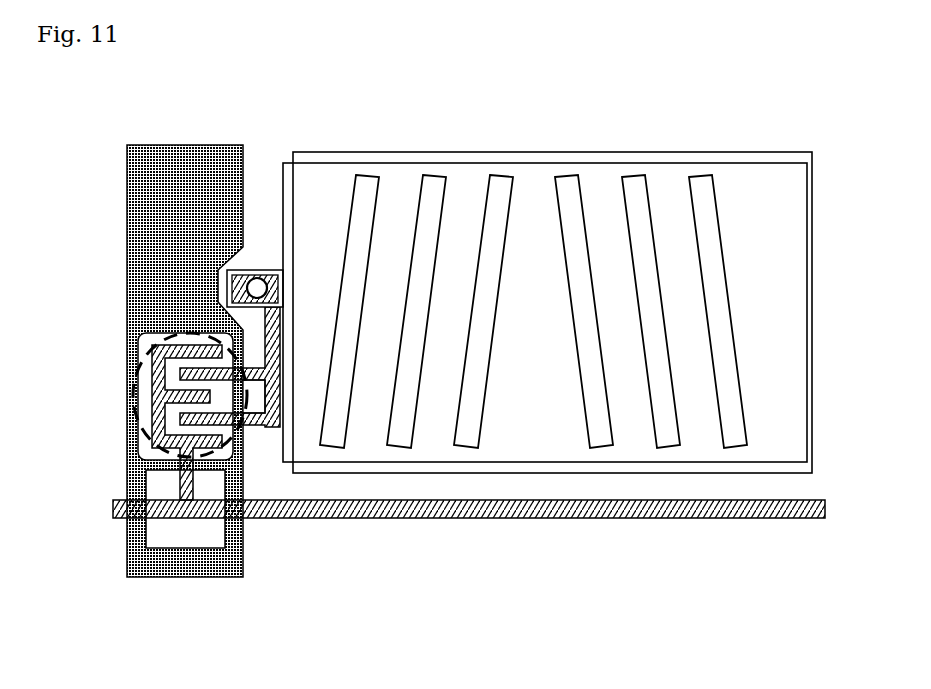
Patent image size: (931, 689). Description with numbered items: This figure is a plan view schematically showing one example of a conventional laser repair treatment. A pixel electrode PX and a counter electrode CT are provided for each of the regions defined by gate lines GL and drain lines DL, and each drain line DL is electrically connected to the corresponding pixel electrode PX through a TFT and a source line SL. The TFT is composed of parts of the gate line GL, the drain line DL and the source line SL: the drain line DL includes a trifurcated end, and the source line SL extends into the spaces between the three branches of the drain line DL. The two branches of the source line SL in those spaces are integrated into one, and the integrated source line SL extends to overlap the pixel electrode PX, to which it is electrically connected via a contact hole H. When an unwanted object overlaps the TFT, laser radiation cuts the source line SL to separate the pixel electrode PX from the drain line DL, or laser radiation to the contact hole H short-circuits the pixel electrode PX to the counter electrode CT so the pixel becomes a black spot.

The gate line GL is at (188, 563).
The drain line DL is at (566, 520).
The source line SL is at (260, 427).
The contact hole H is at (256, 285).
The counter electrode CT is at (575, 153).
The pixel electrode PX is at (467, 185).
The element TFT is at (144, 437).